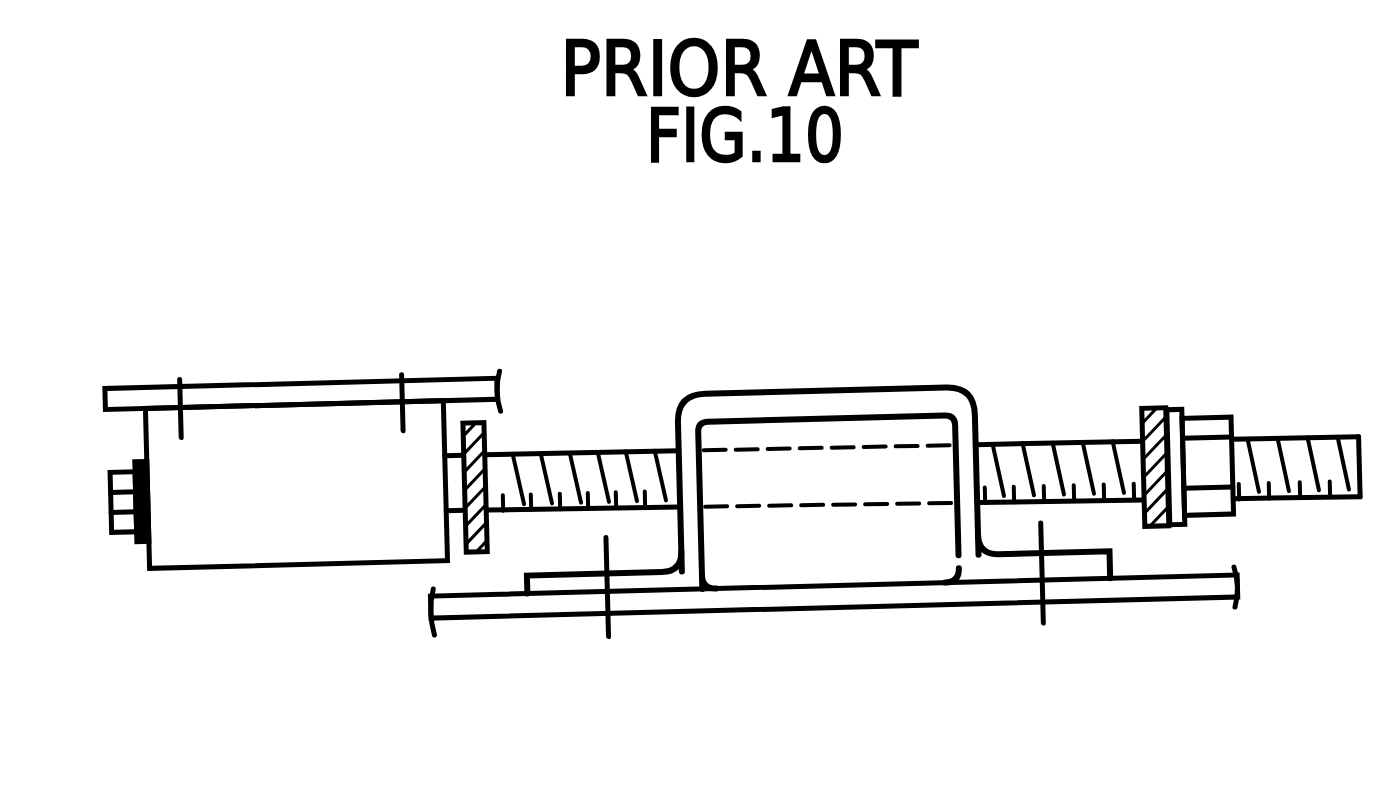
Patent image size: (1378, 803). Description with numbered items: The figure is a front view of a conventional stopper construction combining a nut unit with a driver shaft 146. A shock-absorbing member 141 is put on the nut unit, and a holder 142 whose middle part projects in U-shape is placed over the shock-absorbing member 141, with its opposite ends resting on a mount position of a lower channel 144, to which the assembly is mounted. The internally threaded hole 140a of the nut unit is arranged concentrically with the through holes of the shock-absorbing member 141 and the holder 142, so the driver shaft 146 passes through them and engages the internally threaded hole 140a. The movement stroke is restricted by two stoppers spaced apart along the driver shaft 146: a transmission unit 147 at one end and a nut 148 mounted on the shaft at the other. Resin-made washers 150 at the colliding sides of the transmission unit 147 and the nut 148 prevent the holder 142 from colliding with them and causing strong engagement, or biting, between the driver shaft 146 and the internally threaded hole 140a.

The internally threaded hole 140a is at (804, 450).
The shock-absorbing member 141 is at (725, 568).
The holder 142 is at (925, 395).
The lower channel 144 is at (847, 597).
The driver shaft 146 is at (604, 449).
The transmission unit 147 is at (211, 535).
The nut 148 is at (1217, 426).
The resin-made washer 150 is at (468, 547).